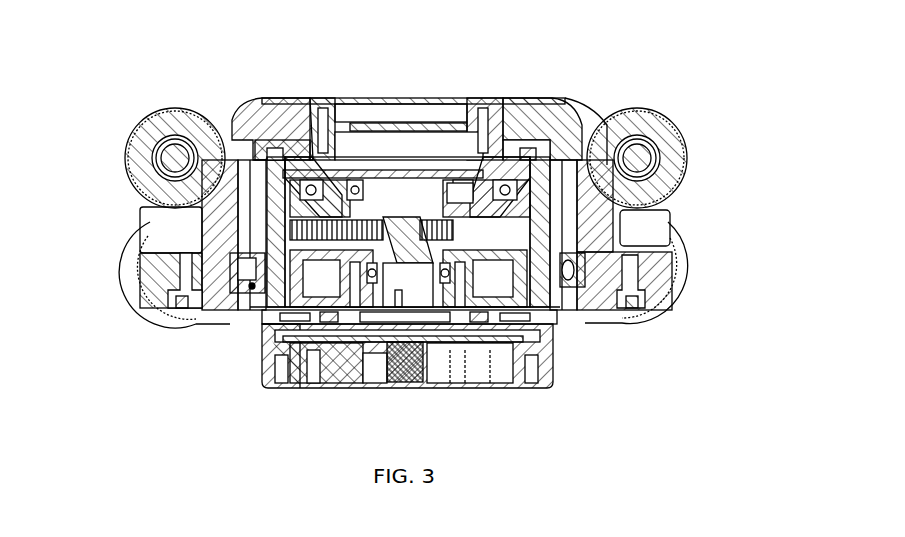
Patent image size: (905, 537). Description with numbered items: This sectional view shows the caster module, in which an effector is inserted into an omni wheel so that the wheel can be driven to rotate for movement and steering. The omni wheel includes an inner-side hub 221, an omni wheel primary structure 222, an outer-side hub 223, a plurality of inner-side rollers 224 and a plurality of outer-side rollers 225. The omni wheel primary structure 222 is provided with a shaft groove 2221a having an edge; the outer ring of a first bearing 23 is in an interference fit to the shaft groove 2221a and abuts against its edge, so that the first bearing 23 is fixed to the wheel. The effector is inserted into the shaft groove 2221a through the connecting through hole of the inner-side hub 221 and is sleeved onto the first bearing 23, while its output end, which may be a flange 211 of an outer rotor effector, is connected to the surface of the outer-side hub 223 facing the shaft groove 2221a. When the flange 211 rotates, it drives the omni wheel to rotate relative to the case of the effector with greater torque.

The flange 211 is at (313, 158).
The outer-side hub 223 is at (497, 163).
The shaft groove 2221a is at (558, 190).
The outer-side rollers 225 is at (653, 115).
The omni wheel primary structure 222 is at (670, 262).
The inner-side hub 221 is at (657, 290).
The inner-side rollers 224 is at (152, 312).
The first bearing 23 is at (252, 290).